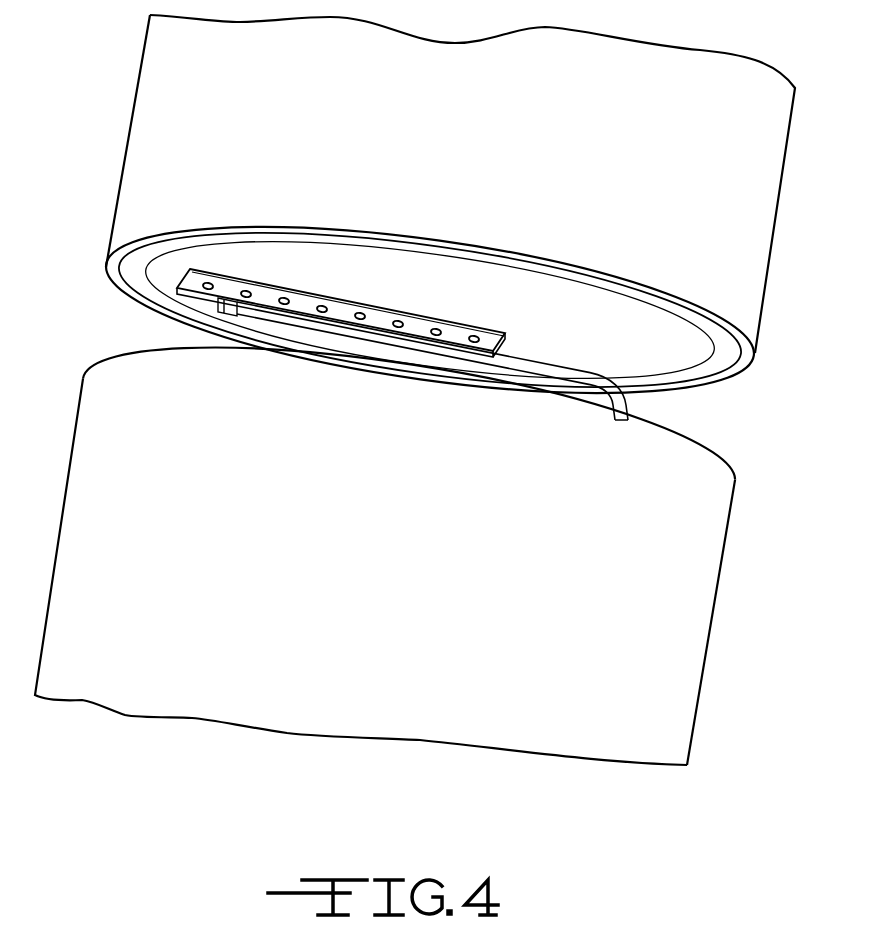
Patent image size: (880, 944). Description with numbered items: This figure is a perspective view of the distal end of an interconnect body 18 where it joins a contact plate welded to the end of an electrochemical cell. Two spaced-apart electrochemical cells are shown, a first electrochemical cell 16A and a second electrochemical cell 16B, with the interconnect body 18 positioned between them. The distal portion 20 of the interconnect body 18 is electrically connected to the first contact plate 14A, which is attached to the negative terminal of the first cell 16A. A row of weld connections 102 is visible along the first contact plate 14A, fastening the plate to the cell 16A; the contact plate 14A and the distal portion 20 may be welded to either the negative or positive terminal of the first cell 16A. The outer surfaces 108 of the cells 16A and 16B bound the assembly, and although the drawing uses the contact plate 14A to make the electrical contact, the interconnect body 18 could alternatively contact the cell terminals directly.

The first electrochemical cell 16A is at (753, 262).
The second electrochemical cell 16B is at (693, 573).
The outer surface 108 is at (131, 113).
The first contact plate 14A is at (263, 306).
The weld connections 102 is at (327, 300).
The distal portion 20 is at (216, 306).
The interconnect body 18 is at (637, 405).